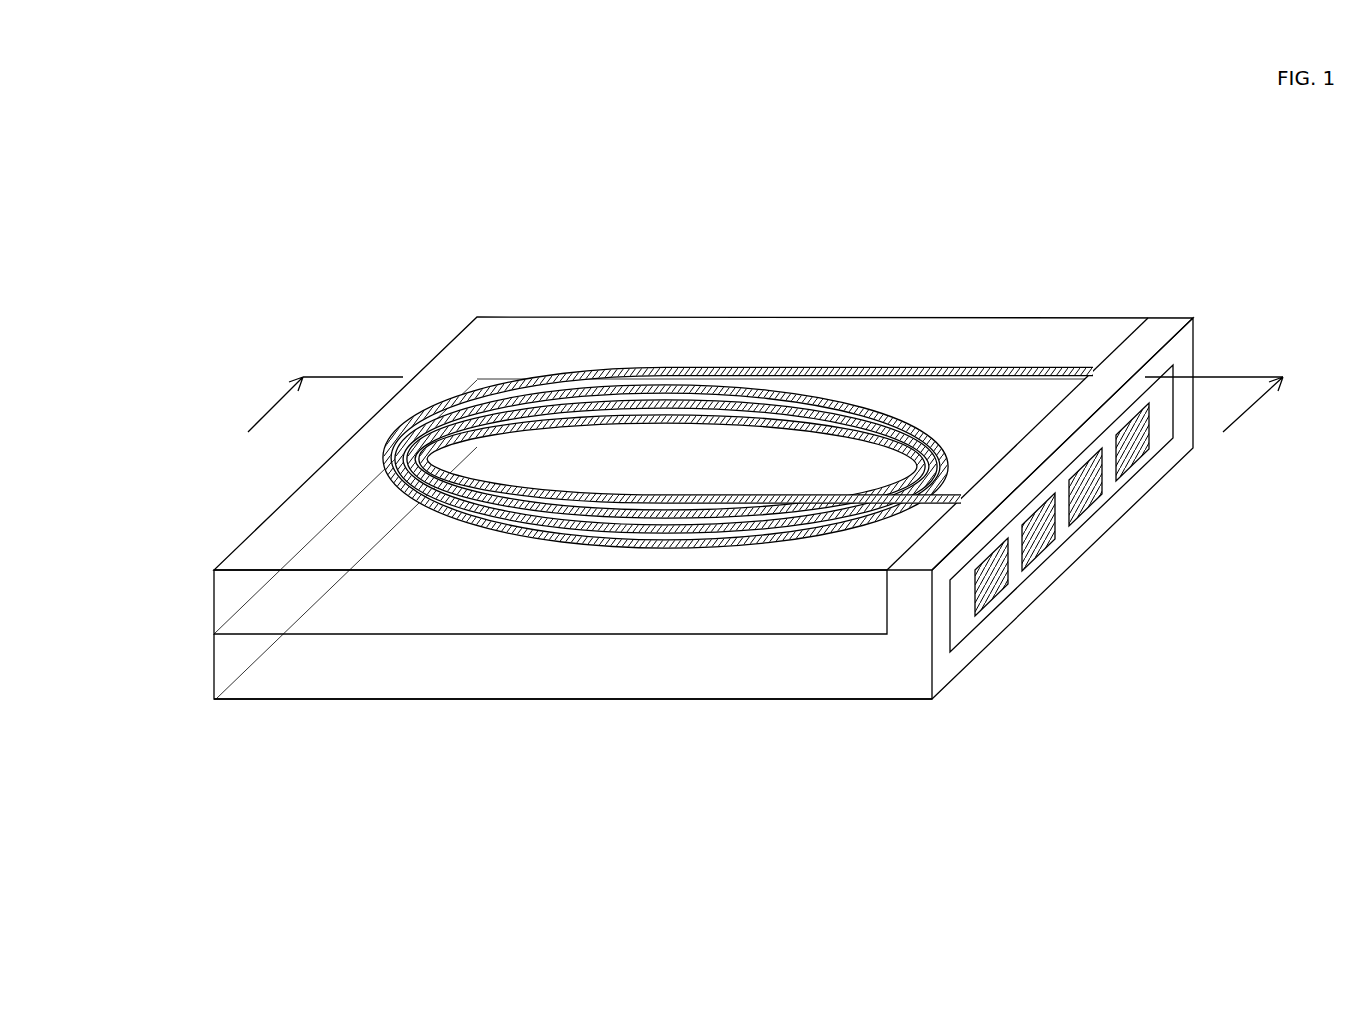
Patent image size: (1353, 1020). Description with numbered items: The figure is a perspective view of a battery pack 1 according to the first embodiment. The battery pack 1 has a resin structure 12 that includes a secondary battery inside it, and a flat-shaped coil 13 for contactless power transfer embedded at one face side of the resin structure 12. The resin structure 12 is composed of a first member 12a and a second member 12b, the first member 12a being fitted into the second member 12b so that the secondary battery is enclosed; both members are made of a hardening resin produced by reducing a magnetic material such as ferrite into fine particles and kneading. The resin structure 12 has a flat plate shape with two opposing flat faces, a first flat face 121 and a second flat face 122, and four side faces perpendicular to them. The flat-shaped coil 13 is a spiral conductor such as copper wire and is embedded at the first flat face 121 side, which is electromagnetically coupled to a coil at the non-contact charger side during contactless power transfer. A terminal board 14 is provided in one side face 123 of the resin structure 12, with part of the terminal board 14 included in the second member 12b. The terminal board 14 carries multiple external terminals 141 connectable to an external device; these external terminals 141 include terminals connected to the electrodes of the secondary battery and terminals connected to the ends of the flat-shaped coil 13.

The battery pack 1 is at (951, 250).
The resin structure 12 is at (115, 590).
The first member 12a is at (227, 598).
The second member 12b is at (227, 660).
The first flat face 121 is at (583, 336).
The second flat face 122 is at (722, 700).
The side face 123 is at (1193, 350).
The flat-shaped coil 13 is at (841, 368).
The terminal board 14 is at (960, 623).
The external terminals 141 is at (993, 583).